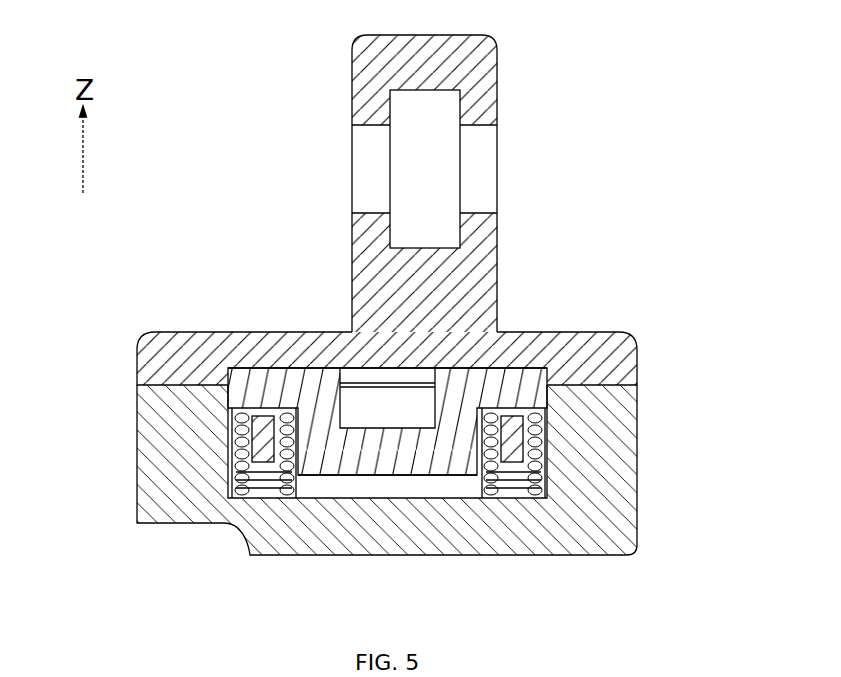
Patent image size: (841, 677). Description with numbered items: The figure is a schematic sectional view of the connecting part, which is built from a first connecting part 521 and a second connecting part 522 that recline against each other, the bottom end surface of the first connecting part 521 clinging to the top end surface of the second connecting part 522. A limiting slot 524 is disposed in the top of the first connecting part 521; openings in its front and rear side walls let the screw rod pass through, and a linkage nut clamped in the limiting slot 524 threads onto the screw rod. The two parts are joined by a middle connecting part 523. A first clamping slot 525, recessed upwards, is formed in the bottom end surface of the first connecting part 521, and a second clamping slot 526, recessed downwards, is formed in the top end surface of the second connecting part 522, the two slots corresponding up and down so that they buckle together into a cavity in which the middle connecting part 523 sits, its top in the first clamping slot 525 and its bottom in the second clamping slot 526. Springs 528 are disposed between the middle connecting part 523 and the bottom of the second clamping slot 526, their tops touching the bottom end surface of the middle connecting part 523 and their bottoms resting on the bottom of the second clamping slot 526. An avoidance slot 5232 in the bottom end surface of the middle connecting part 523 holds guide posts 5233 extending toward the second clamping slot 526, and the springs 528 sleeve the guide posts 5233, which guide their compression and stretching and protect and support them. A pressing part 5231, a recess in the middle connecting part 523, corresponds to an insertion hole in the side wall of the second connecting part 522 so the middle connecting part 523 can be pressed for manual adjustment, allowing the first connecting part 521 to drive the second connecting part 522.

The first connecting part 521 is at (580, 340).
The second connecting part 522 is at (607, 453).
The middle connecting part 523 is at (443, 445).
The pressing part 5231 is at (392, 420).
The avoidance slot 5232 is at (230, 455).
The guide post 5233 is at (266, 493).
The limiting slot 524 is at (430, 161).
The first clamping slot 525 is at (257, 368).
The second clamping slot 526 is at (386, 483).
The spring 528 is at (258, 473).